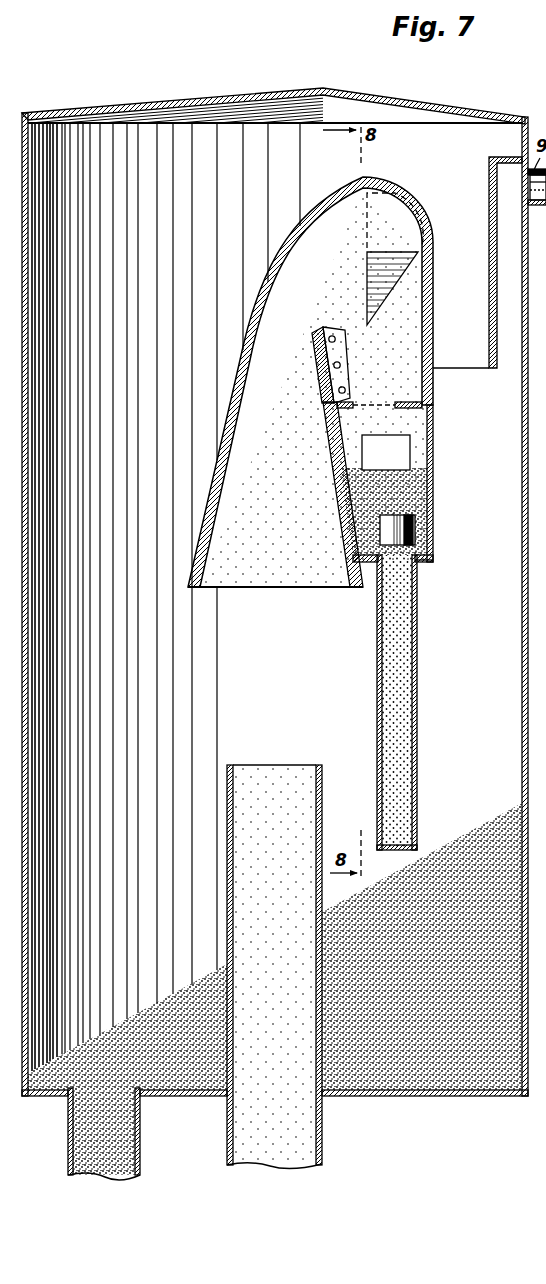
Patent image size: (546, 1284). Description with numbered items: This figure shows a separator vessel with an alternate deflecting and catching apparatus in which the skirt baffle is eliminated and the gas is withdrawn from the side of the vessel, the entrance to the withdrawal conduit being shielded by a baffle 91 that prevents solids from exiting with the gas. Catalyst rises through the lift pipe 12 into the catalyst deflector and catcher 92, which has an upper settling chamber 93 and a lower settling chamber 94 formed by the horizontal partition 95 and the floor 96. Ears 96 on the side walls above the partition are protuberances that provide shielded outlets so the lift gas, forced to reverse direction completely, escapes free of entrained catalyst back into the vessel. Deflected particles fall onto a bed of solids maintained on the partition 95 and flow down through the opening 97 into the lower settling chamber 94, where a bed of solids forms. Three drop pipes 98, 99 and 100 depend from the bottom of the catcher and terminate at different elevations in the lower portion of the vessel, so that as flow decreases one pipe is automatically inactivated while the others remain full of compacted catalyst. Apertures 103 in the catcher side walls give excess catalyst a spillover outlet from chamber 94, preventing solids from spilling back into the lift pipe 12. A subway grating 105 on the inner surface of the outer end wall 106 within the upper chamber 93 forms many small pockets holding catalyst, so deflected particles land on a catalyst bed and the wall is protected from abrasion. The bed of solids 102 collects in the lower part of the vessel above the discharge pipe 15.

The lift pipe 12 is at (320, 790).
The discharge pipe 15 is at (140, 1152).
The baffle 91 is at (489, 160).
The catalyst deflector and catcher 92 is at (298, 228).
The upper settling chamber 93 is at (404, 356).
The lower settling chamber 94 is at (411, 433).
The horizontal partition 95 is at (415, 405).
The floor 96 is at (388, 217).
The opening 97 is at (381, 404).
The drop pipe 98 is at (417, 644).
The drop pipe 99 is at (414, 527).
The drop pipe 100 is at (417, 487).
The bed of material 102 is at (275, 946).
The apertures 103 is at (405, 462).
The subway grating 105 is at (433, 276).
The outer end wall 106 is at (213, 491).